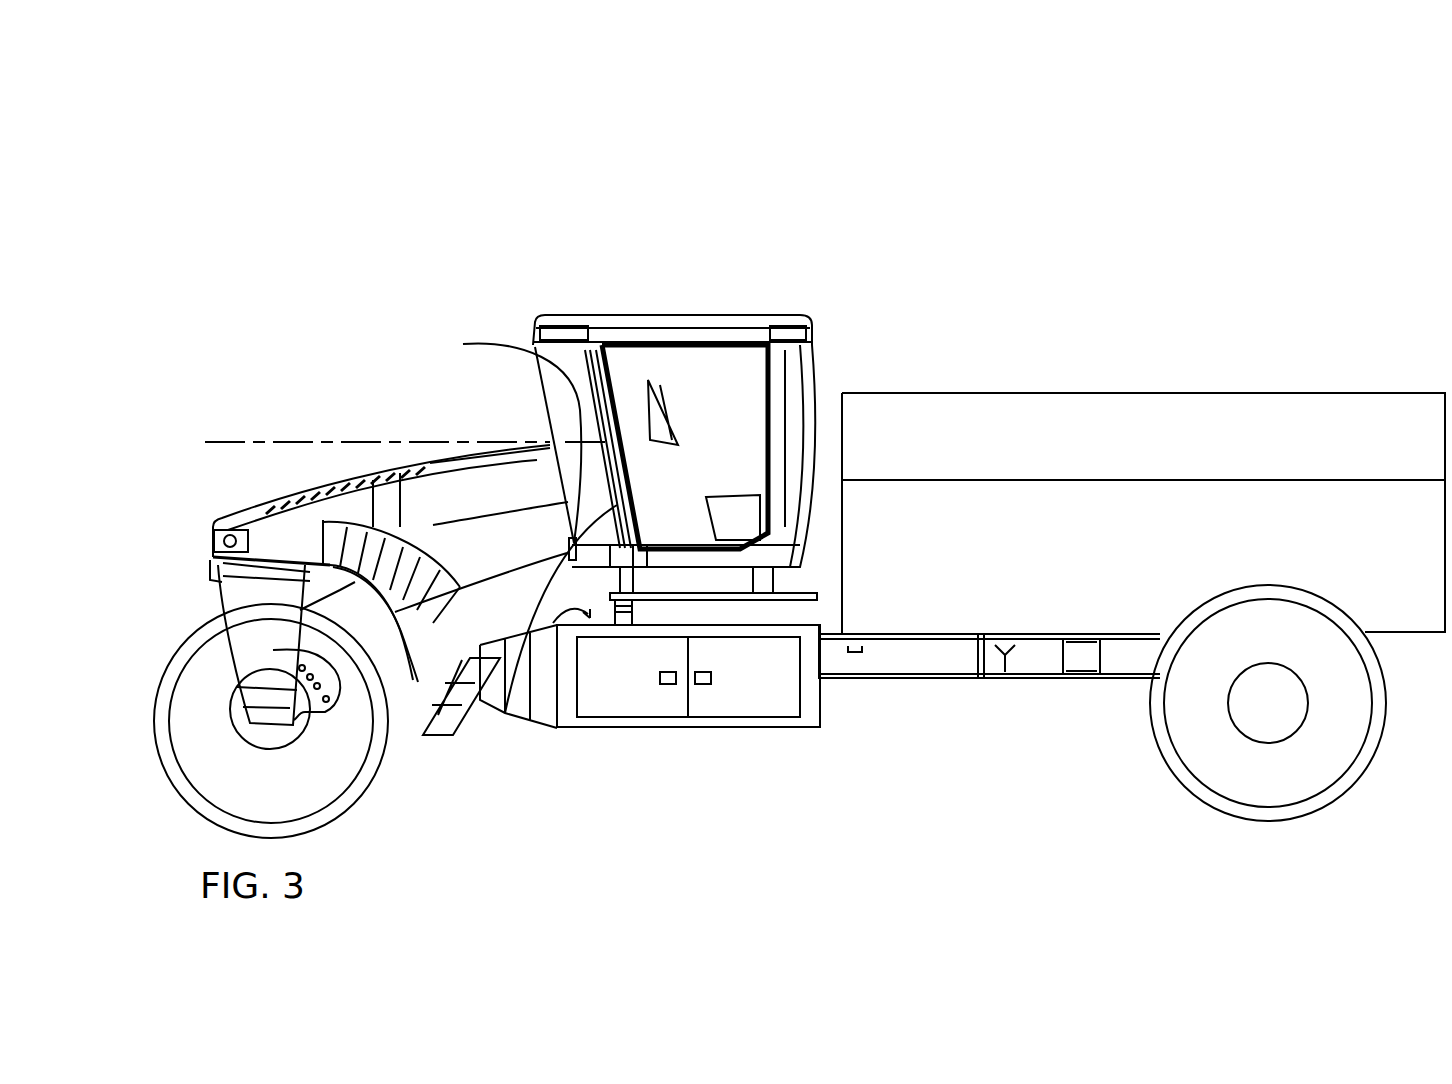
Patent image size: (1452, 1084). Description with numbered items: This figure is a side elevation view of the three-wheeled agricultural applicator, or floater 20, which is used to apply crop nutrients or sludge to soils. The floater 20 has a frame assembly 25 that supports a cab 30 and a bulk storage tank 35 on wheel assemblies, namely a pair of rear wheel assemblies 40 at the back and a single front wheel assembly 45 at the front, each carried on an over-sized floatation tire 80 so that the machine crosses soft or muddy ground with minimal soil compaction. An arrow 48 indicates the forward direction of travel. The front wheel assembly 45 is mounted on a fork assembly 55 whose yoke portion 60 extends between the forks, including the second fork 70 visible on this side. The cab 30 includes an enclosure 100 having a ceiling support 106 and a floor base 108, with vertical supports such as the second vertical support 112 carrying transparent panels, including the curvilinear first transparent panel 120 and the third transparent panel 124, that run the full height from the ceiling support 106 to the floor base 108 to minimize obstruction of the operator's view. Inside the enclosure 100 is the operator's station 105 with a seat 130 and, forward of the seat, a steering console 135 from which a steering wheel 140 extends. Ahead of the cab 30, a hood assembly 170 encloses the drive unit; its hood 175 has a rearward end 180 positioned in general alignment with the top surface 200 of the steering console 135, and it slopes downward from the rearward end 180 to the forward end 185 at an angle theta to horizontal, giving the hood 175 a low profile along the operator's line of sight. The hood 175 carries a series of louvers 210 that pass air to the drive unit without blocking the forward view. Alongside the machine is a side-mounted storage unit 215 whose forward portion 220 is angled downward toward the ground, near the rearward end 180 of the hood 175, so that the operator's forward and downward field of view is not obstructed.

The floater 20 is at (1228, 145).
The frame assembly 25 is at (889, 702).
The cab 30 is at (558, 244).
The bulk storage tank 35 is at (1318, 395).
The rear wheel assembly 40 is at (1206, 848).
The front wheel assembly 45 is at (385, 799).
The arrow indicating forward direction of travel 48 is at (372, 284).
The fork assembly 55 is at (200, 588).
The yoke portion 60 is at (213, 558).
The second fork 70 is at (338, 706).
The floatation tire 80 is at (172, 758).
The enclosure 100 is at (763, 302).
The operator's station 105 is at (716, 460).
The ceiling support 106 is at (632, 330).
The floor base 108 is at (703, 557).
The second vertical support 112 is at (500, 655).
The first transparent panel 120 is at (565, 402).
The third transparent panel 124 is at (560, 640).
The seat 130 is at (735, 507).
The steering console 135 is at (606, 486).
The steering wheel 140 is at (660, 433).
The hood assembly 170 is at (447, 497).
The hood 175 is at (458, 583).
The rearward end 180 is at (549, 466).
The forward end 185 is at (250, 488).
The top surface 200 is at (470, 344).
The louvers 210 is at (305, 503).
The side-mounted storage unit 215 is at (548, 585).
The forward portion 220 is at (504, 617).